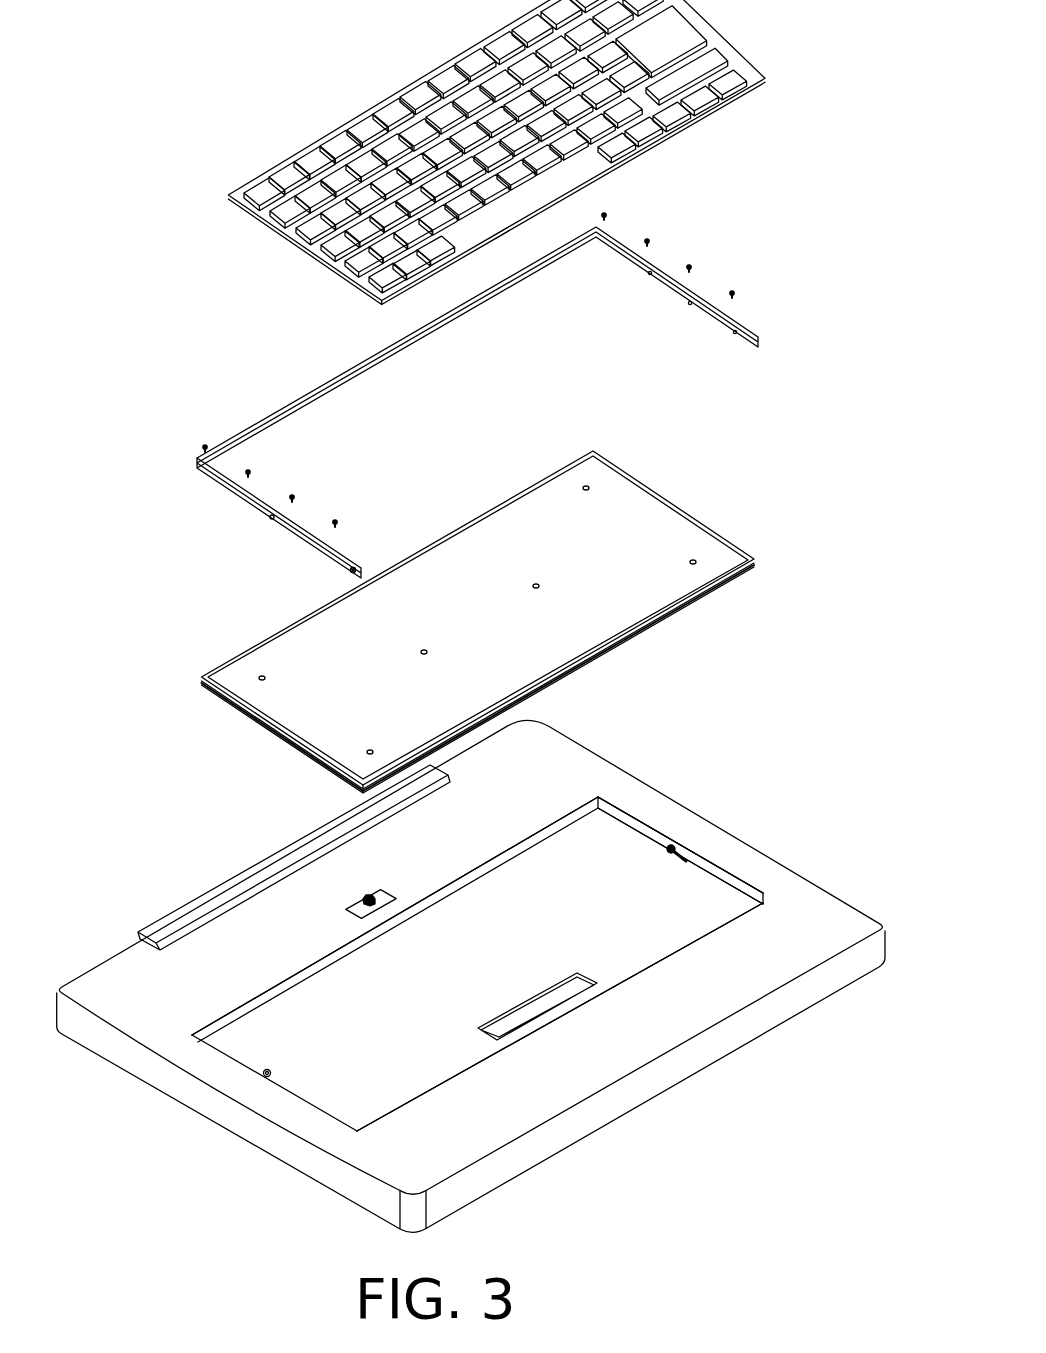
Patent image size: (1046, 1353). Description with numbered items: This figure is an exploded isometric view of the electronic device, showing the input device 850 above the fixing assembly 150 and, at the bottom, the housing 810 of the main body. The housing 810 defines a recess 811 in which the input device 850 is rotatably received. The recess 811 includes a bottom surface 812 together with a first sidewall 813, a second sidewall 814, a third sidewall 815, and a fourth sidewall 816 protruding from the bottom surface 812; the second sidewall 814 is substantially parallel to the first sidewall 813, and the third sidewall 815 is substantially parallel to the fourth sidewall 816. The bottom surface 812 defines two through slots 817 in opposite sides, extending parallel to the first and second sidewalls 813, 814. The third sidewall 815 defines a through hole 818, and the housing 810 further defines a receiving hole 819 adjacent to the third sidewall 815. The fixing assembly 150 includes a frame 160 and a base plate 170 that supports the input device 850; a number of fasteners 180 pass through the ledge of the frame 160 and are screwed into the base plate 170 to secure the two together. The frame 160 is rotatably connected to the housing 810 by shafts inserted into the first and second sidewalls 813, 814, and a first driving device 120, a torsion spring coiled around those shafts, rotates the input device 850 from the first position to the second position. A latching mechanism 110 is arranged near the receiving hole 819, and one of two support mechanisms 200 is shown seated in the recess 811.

The input device 850 is at (358, 132).
The fixing assembly 150 is at (494, 510).
The frame 160 is at (661, 291).
The base plate 170 is at (604, 506).
The fasteners 180 is at (735, 290).
The first driving device 120 is at (336, 580).
The housing 810 is at (150, 972).
The recess 811 is at (325, 1070).
The bottom surface 812 is at (430, 1048).
The first sidewall 813 is at (737, 877).
The second sidewall 814 is at (330, 1115).
The third sidewall 815 is at (565, 822).
The fourth sidewall 816 is at (617, 982).
The through slots 817 is at (686, 856).
The through hole 818 is at (393, 903).
The receiving hole 819 is at (350, 912).
The latching mechanism 110 is at (355, 900).
The support mechanisms 200 is at (672, 847).